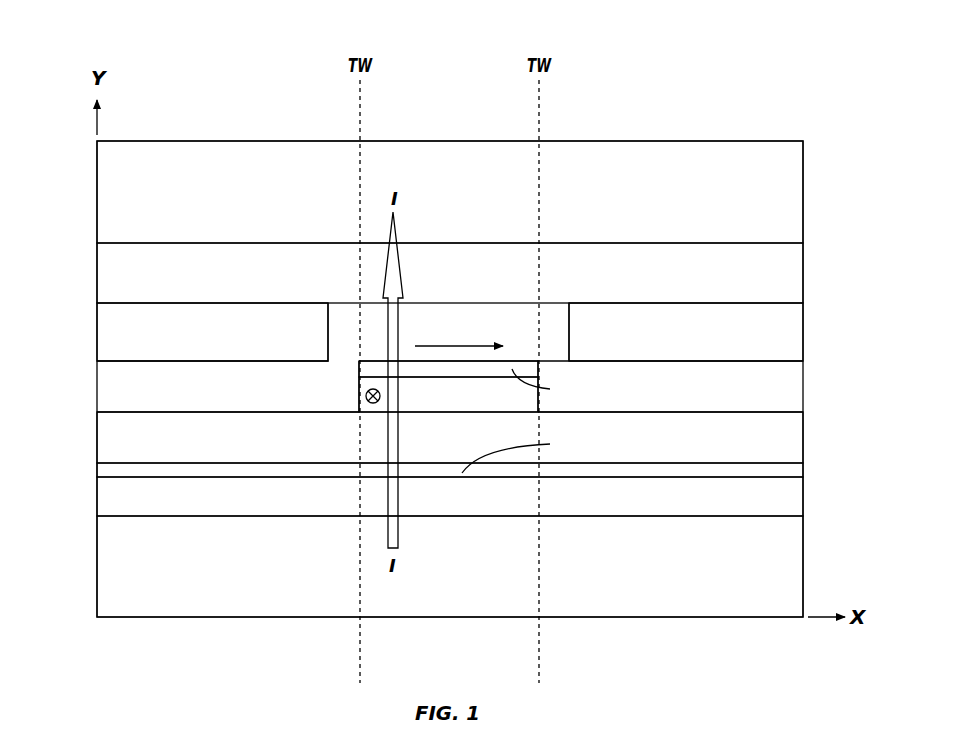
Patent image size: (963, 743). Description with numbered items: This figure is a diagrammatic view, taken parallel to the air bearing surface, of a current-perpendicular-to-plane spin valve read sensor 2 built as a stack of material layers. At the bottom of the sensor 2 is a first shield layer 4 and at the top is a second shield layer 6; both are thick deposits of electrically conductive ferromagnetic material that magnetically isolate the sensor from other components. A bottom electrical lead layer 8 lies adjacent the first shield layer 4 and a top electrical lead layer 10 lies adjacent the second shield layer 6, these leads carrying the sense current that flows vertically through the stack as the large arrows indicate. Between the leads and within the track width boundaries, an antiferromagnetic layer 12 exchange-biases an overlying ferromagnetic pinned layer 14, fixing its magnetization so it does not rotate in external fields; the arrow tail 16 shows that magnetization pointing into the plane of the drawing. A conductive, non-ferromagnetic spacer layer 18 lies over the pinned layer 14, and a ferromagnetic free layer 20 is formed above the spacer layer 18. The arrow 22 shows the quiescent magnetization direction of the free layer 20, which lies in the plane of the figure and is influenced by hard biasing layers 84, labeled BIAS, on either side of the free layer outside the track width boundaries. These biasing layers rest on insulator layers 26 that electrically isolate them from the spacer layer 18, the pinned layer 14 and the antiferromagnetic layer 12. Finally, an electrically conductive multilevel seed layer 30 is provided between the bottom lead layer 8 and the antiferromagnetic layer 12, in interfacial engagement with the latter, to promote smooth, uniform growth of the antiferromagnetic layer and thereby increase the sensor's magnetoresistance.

The CPP spin valve sensor 2 is at (90, 50).
The S1 shield layer 4 is at (97, 566).
The S2 shield layer 6 is at (97, 188).
The bottom electrical lead layer 8 is at (97, 496).
The top electrical lead layer 10 is at (97, 272).
The antiferromagnetic layer 12 is at (97, 438).
The pinned layer 14 is at (448, 394).
The arrow tail 16 is at (366, 402).
The spacer layer 18 is at (521, 370).
The free layer 20 is at (448, 340).
The arrow 22 is at (476, 345).
The insulator layer 26 is at (97, 388).
The multilevel seed layer 30 is at (97, 470).
The bias layer 84 is at (97, 333).